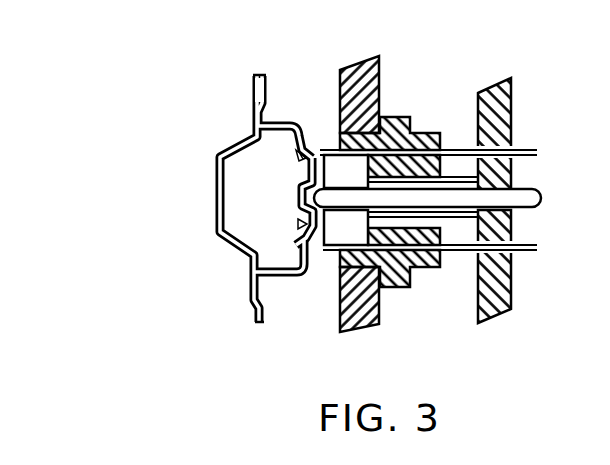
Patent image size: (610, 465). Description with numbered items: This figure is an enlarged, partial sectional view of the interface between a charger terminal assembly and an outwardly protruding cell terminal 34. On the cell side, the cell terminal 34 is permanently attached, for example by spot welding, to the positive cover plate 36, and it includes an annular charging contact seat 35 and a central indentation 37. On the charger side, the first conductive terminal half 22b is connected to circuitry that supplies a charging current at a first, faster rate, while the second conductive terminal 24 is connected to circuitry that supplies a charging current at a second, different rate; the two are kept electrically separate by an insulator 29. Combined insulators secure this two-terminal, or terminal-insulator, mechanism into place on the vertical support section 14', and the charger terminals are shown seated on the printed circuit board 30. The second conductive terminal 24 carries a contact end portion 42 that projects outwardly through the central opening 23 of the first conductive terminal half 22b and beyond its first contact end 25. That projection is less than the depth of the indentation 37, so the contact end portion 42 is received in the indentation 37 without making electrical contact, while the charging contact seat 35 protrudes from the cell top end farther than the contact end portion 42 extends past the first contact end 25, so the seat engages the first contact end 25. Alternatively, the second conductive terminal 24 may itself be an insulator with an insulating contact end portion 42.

The vertical support section 14' is at (370, 214).
The first conductive terminal half 22b is at (468, 252).
The central opening 23 is at (298, 224).
The second conductive terminal 24 is at (531, 196).
The first contact end 25 is at (315, 248).
The insulator 29 is at (407, 242).
The printed circuit board 30 is at (498, 107).
The cell terminal 34 is at (282, 270).
The charging contact seat 35 is at (307, 165).
The positive cover plate 36 is at (250, 288).
The indentation 37 is at (300, 188).
The contact end portion 42 is at (296, 158).